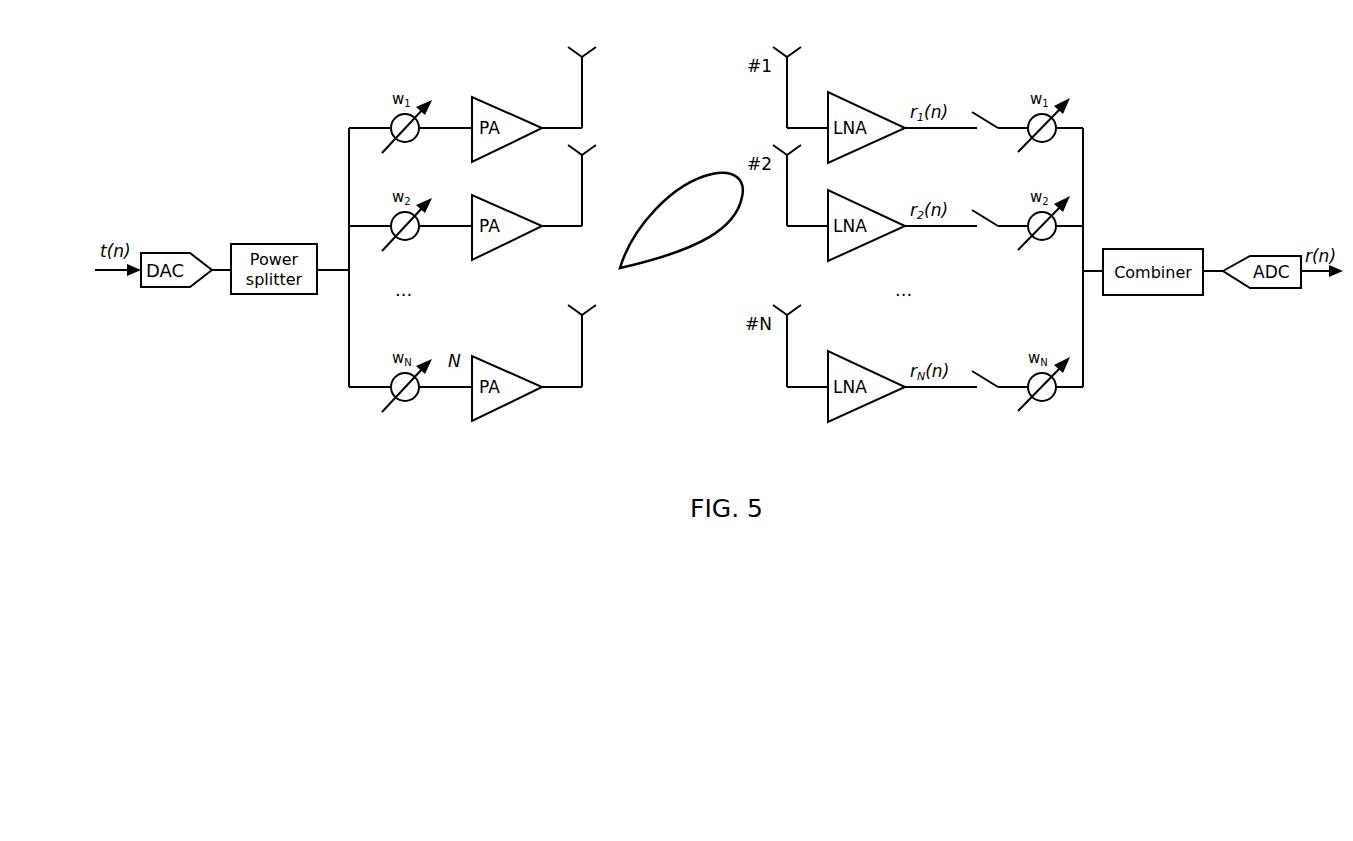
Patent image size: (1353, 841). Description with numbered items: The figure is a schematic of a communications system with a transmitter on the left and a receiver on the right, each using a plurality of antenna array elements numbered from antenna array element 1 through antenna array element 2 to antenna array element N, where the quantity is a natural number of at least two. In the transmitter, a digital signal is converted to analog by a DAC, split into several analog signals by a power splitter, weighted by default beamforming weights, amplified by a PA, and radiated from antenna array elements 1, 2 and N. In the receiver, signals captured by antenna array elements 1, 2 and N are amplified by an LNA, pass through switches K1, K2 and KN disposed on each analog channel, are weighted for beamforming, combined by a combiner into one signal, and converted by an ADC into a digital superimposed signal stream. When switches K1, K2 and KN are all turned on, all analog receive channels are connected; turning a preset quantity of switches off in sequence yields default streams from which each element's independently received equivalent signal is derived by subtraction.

The antenna array element # 1 is at (596, 87).
The antenna array element # 2 is at (596, 185).
The antenna array element # N is at (595, 346).
The switch K1 is at (985, 135).
The switch K2 is at (985, 233).
The switch KN is at (984, 394).